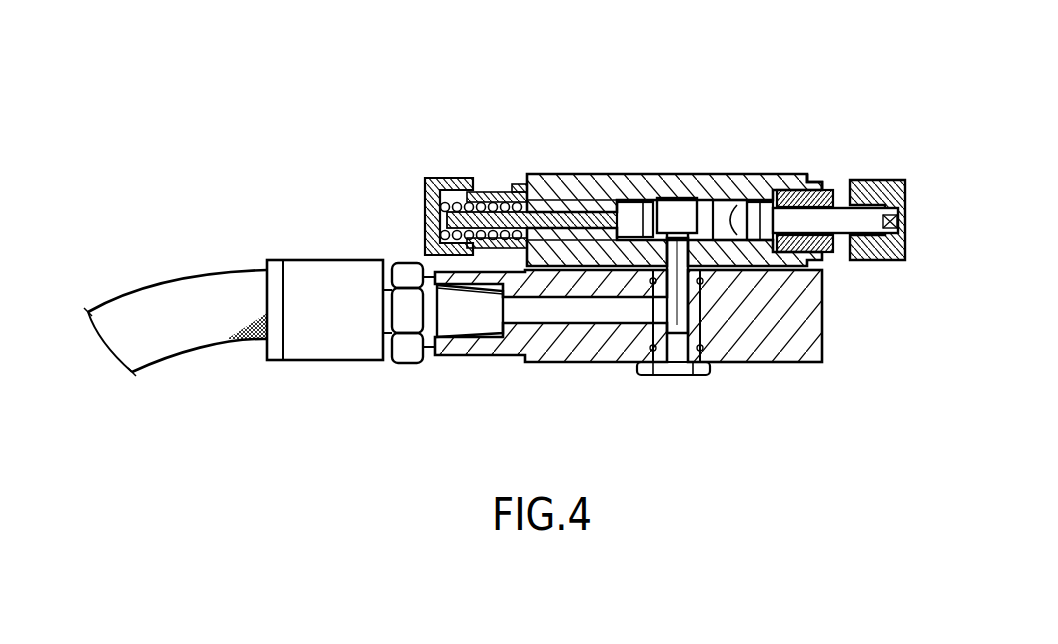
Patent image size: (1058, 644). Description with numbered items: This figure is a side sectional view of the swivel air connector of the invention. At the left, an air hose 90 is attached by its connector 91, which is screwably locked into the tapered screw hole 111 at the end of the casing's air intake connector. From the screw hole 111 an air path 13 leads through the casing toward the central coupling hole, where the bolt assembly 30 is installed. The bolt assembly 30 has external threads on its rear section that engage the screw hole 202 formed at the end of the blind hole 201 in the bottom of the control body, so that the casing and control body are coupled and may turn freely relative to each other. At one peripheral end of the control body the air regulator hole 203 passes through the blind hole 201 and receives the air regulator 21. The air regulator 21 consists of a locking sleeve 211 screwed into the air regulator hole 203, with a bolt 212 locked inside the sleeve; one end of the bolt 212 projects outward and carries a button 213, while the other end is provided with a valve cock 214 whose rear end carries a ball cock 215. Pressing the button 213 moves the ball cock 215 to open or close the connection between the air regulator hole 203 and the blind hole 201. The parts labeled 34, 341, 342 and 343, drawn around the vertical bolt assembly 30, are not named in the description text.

The air path 13 is at (580, 312).
The air regulator 21 is at (836, 182).
The bolt assembly 30 is at (706, 375).
The valve body 34 is at (707, 174).
The air hose 90 is at (207, 285).
The connector 91 is at (342, 272).
The tapered screw hole 111 is at (477, 324).
The blind hole 201 is at (668, 205).
The screw hole 202 is at (650, 200).
The air regulator hole 203 is at (714, 268).
The locking sleeve 211 is at (822, 177).
The bolt 212 is at (811, 190).
The button 213 is at (903, 182).
The valve cock 214 is at (758, 200).
The ball cock 215 is at (714, 200).
The right bushing 341 is at (703, 317).
The left bushing 342 is at (647, 330).
The lock nut 343 is at (708, 368).